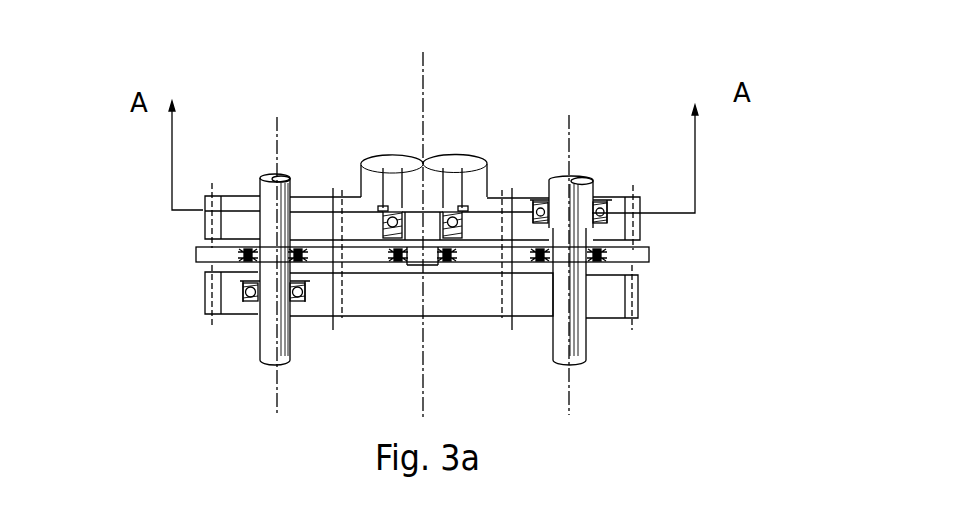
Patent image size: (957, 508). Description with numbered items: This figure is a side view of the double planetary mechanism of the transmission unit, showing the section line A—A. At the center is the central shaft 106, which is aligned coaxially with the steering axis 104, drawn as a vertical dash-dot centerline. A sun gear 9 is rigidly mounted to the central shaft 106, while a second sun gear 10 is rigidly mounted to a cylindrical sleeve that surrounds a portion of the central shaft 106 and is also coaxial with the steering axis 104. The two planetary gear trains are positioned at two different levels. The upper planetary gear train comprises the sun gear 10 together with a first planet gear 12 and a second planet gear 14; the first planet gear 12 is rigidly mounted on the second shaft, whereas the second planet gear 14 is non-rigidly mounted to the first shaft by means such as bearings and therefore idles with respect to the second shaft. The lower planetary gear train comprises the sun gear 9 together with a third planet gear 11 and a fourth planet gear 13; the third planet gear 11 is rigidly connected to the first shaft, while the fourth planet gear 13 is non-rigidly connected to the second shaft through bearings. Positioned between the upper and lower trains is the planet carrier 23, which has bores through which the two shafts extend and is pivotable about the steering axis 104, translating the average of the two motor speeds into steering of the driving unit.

The sun gear 9 is at (437, 307).
The sun gear 10 is at (473, 222).
The third planet gear 11 is at (615, 299).
The first planet gear 12 is at (223, 225).
The fourth planet gear 13 is at (227, 290).
The second planet gear 14 is at (618, 227).
The planet carrier 23 is at (650, 260).
The steering axis 104 is at (420, 77).
The central shaft 106 is at (412, 177).